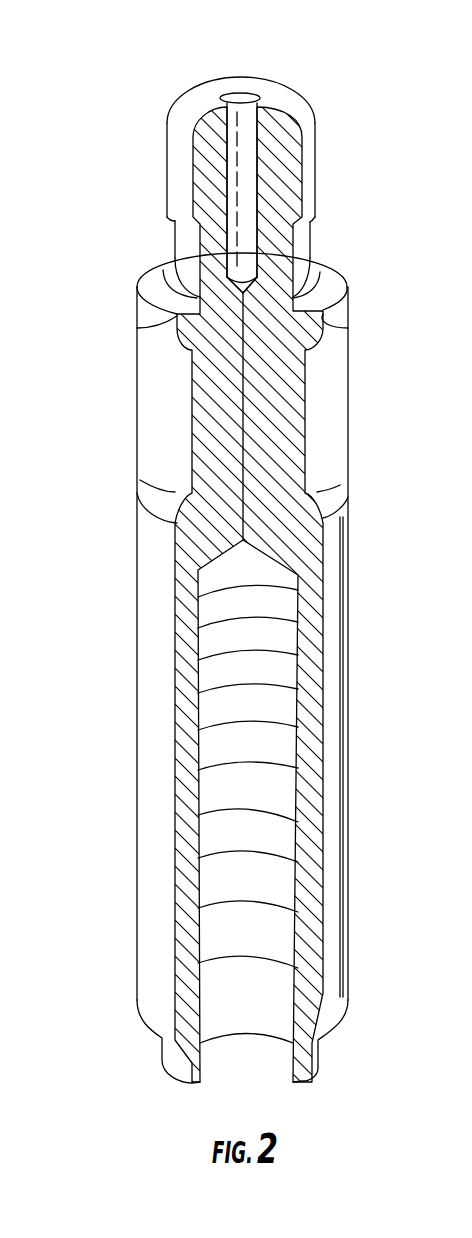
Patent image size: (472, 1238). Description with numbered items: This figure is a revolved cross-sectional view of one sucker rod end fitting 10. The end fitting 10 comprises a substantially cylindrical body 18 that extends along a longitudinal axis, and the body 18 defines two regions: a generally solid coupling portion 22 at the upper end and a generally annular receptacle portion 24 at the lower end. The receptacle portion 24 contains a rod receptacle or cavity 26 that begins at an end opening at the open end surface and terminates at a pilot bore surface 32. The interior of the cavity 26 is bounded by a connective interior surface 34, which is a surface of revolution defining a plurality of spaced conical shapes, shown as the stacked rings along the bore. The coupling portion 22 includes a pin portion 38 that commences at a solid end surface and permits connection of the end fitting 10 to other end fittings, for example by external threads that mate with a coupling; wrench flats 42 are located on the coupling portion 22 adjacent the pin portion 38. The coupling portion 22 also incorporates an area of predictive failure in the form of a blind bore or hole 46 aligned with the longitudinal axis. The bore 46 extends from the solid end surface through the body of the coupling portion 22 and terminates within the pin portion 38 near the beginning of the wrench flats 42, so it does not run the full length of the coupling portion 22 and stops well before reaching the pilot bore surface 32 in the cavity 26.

The end fitting 10 is at (236, 584).
The body 18 is at (350, 528).
The coupling portion 22 is at (213, 278).
The receptacle portion 24 is at (237, 689).
The rod receptacle or cavity 26 is at (242, 1063).
The pilot bore surface 32 is at (298, 804).
The connective interior surface 34 is at (200, 937).
The pin portion 38 is at (310, 148).
The wrench flats 42 is at (322, 423).
The blind bore or hole 46 is at (269, 167).